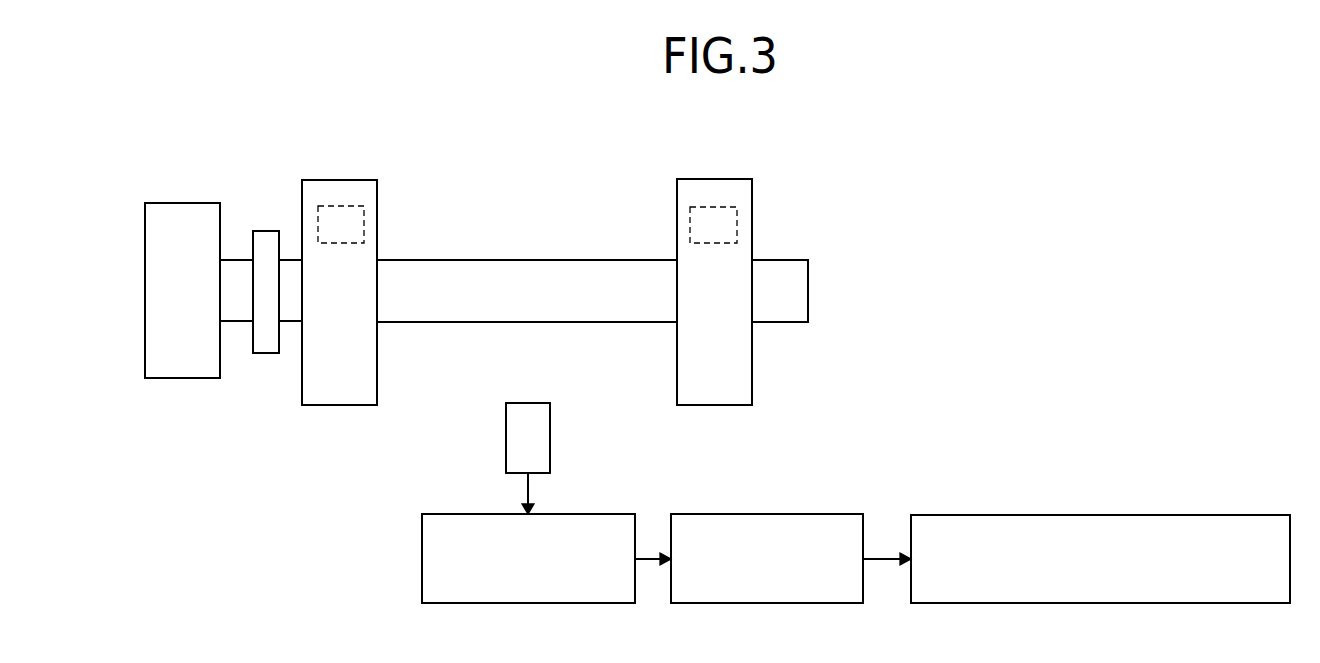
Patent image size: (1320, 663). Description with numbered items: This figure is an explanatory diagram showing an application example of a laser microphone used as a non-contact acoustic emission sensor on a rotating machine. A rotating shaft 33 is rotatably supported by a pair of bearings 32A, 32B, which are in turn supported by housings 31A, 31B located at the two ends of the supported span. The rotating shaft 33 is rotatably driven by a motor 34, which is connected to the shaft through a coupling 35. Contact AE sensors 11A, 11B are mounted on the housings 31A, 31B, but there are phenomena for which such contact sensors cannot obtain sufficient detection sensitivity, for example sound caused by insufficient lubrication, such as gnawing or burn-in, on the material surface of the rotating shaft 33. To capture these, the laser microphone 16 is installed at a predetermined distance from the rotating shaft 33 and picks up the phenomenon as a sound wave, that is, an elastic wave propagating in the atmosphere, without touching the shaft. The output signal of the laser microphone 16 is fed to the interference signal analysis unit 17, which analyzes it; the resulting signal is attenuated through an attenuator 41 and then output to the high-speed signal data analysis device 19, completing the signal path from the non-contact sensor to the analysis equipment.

The motor 34 is at (190, 203).
The coupling 35 is at (263, 231).
The housing 31A is at (338, 180).
The contact AE sensor 11A is at (378, 221).
The bearing 32A is at (378, 258).
The rotating shaft 33 is at (547, 260).
The housing 31B is at (712, 179).
The contact AE sensor 11B is at (740, 222).
The bearing 32B is at (752, 258).
The laser microphone 16 is at (552, 428).
The interference signal analysis unit 17 is at (589, 513).
The attenuator 41 is at (806, 513).
The high-speed signal data analysis device 19 is at (1213, 513).